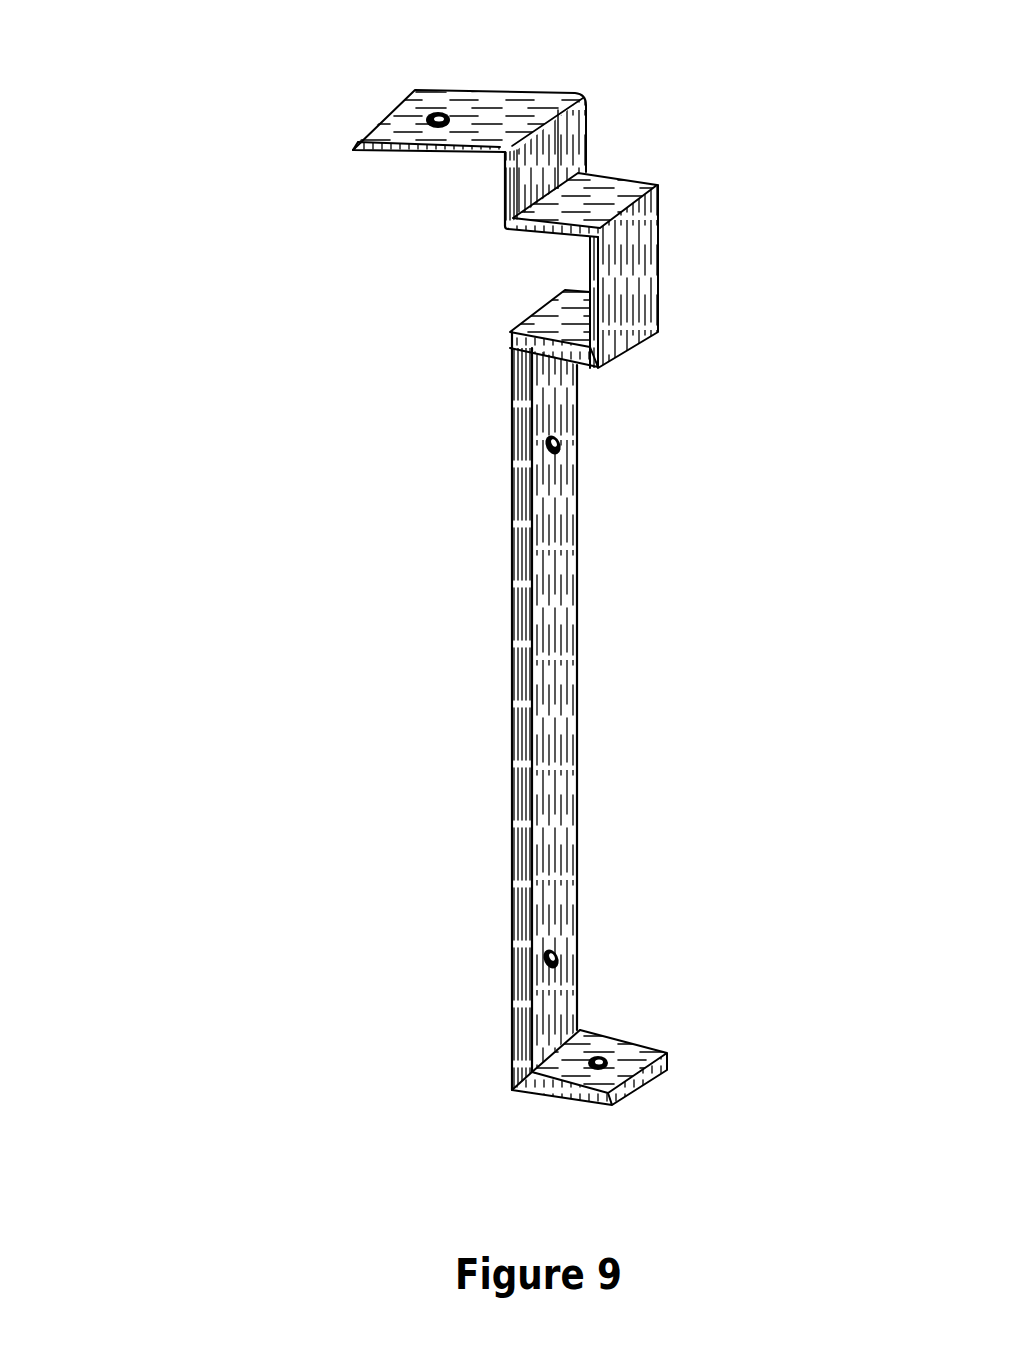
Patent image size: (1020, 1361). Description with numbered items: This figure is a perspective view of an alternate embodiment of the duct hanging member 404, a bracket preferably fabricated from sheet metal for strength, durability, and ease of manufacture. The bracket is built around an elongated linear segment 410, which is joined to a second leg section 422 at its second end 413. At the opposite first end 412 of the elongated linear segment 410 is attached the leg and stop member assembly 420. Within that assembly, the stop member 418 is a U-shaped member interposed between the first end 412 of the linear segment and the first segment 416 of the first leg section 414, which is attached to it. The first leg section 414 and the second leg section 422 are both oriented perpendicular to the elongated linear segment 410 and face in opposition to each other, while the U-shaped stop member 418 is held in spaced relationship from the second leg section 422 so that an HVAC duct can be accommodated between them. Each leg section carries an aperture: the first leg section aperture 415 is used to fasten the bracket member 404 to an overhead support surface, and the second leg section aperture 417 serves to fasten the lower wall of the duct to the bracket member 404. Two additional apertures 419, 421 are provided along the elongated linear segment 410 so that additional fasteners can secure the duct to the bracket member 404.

The duct hanging member 404 is at (217, 632).
The leg and stop member assembly 420 is at (192, 215).
The first leg section 414 is at (482, 115).
The first leg section aperture 415 is at (437, 128).
The first segment 416 is at (562, 153).
The stop member 418 is at (633, 253).
The first end 412 is at (555, 410).
The aperture 419 is at (560, 450).
The elongated linear segment 410 is at (555, 655).
The aperture 421 is at (557, 952).
The second end 413 is at (555, 1023).
The second leg section aperture 417 is at (603, 1062).
The second leg section 422 is at (567, 1068).